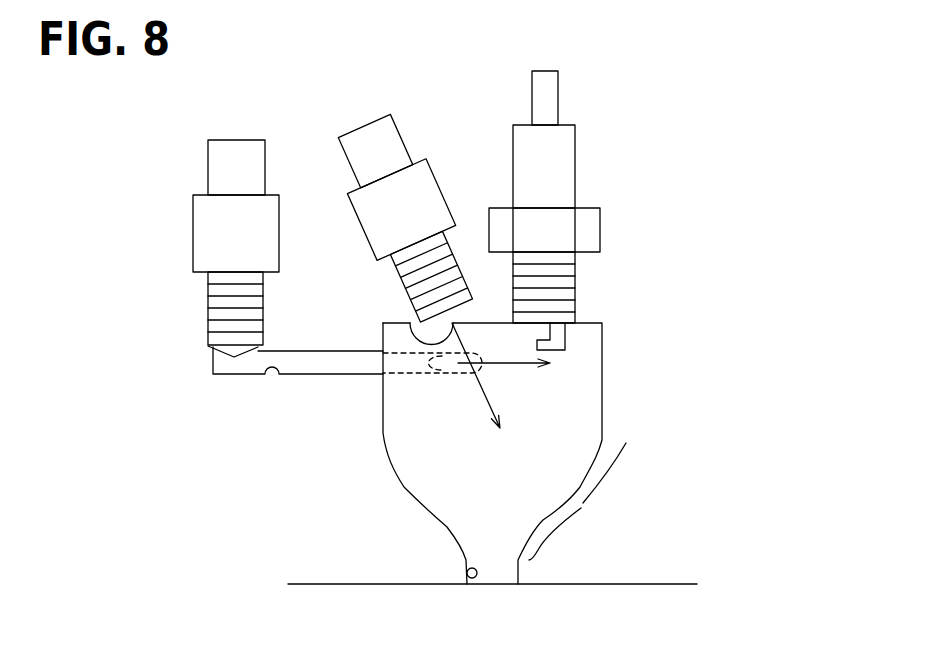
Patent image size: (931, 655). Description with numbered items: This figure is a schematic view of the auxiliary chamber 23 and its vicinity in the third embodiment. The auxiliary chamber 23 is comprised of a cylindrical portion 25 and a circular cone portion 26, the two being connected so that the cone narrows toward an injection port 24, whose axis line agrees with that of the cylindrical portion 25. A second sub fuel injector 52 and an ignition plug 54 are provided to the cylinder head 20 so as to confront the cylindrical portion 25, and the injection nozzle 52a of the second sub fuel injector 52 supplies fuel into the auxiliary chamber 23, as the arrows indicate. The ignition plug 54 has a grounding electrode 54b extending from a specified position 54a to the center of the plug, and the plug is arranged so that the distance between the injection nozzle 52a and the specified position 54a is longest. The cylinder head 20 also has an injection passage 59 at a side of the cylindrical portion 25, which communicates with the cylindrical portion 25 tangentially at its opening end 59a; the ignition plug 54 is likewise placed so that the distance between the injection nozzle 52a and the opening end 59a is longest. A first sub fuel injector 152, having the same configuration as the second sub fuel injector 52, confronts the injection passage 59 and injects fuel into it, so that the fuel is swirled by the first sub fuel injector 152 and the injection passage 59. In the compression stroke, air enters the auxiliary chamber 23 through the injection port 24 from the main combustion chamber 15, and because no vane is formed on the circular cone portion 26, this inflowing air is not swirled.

The first sub fuel injector 152 is at (233, 140).
The second sub fuel injector 52 is at (362, 123).
The injection nozzle 52a is at (413, 322).
The ignition plug 54 is at (577, 168).
The specified position 54a is at (558, 322).
The grounding electrode 54b is at (567, 341).
The cylindrical portion 25 is at (625, 323).
The injection passage 59 is at (264, 375).
The opening end 59a is at (462, 373).
The auxiliary chamber 23 is at (463, 490).
The injection port 24 is at (462, 572).
The circular cone portion 26 is at (582, 505).
The cylinder head 20 is at (595, 567).
The main combustion chamber 15 is at (397, 620).